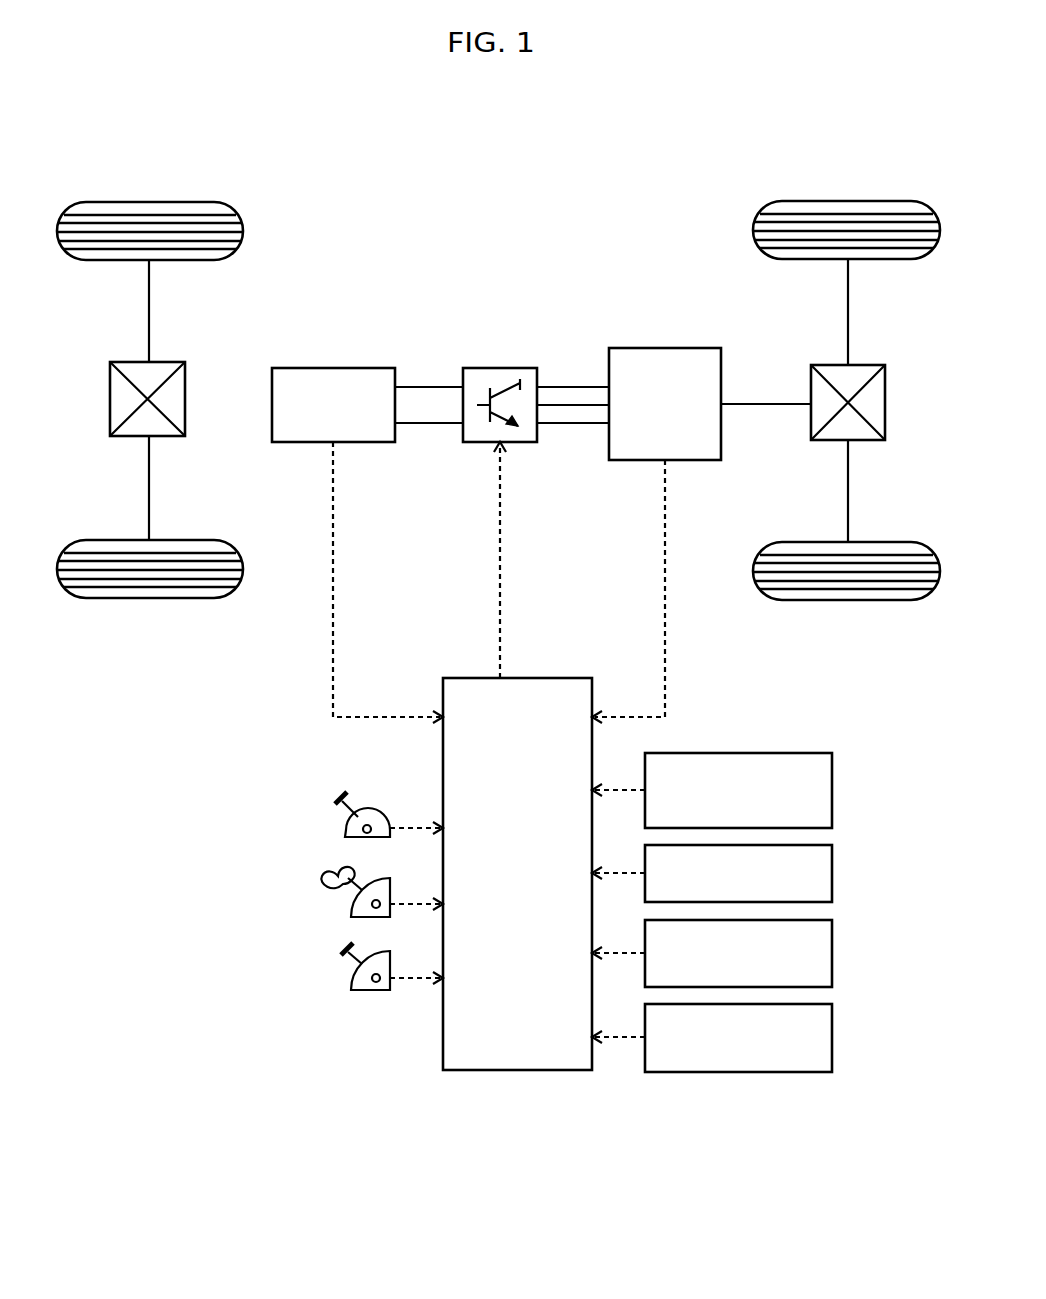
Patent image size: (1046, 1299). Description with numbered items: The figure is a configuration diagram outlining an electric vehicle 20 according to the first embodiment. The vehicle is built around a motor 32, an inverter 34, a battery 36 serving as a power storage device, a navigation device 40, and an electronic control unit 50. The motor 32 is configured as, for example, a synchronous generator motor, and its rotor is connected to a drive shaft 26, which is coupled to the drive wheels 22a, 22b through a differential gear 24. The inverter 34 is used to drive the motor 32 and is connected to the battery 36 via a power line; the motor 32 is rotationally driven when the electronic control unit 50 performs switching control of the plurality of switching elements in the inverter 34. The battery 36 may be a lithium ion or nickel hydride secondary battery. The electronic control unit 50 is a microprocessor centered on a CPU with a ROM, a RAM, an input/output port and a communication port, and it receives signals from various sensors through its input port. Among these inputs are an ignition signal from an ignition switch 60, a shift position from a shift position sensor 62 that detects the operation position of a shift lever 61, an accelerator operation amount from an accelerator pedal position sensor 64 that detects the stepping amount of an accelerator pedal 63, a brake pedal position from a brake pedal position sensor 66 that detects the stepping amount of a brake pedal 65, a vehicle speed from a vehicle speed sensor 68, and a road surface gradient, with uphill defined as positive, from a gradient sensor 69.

The electric vehicle 20 is at (629, 166).
The drive wheel 22a is at (851, 201).
The drive wheel 22b is at (851, 602).
The differential gear 24 is at (858, 365).
The drive shaft 26 is at (754, 403).
The motor 32 is at (665, 348).
The inverter 34 is at (497, 368).
The battery 36 is at (333, 368).
The navigation device 40 is at (832, 790).
The electronic control unit 50 is at (537, 678).
The ignition switch 60 is at (832, 876).
The shift lever 61 is at (338, 811).
The shift position sensor 62 is at (355, 830).
The accelerator pedal 63 is at (335, 894).
The accelerator pedal position sensor 64 is at (353, 905).
The brake pedal 65 is at (342, 966).
The brake pedal position sensor 66 is at (350, 983).
The vehicle speed sensor 68 is at (832, 951).
The gradient sensor 69 is at (832, 1035).